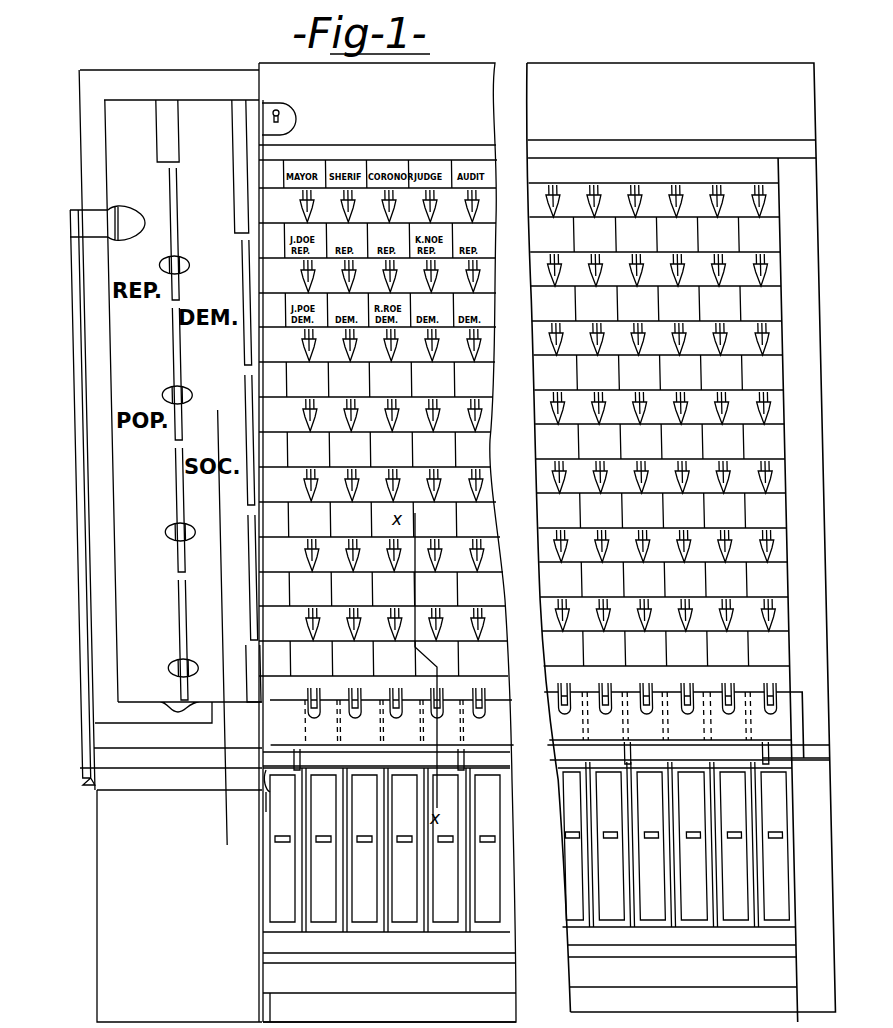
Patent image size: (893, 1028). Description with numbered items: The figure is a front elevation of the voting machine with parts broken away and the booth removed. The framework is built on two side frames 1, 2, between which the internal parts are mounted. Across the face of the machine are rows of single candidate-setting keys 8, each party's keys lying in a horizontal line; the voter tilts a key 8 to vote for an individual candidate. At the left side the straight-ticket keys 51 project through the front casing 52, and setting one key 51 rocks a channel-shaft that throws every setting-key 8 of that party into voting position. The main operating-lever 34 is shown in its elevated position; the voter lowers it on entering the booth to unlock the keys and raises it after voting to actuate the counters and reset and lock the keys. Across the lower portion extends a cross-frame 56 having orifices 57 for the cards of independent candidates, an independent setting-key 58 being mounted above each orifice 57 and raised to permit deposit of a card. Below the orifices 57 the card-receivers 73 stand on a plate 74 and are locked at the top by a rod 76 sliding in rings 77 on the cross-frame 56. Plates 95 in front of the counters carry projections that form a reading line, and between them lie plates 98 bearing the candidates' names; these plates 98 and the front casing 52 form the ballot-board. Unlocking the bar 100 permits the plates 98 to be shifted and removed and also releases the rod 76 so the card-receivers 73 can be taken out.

The side frame 1 is at (166, 546).
The side frame 2 is at (680, 542).
The single candidate-setting key 8 is at (386, 620).
The main operating-lever 34 is at (74, 514).
The straight-ticket key 51 is at (180, 655).
The front casing 52 is at (194, 401).
The cross-frame 56 is at (530, 718).
The orifice 57 is at (436, 700).
The independent setting-key 58 is at (310, 700).
The card-receiver 73 is at (529, 847).
The plate 74 is at (530, 983).
The rod 76 is at (283, 758).
The ring 77 is at (470, 760).
The plate 95 is at (513, 447).
The name-plate 98 is at (557, 441).
The bar 100 is at (263, 148).